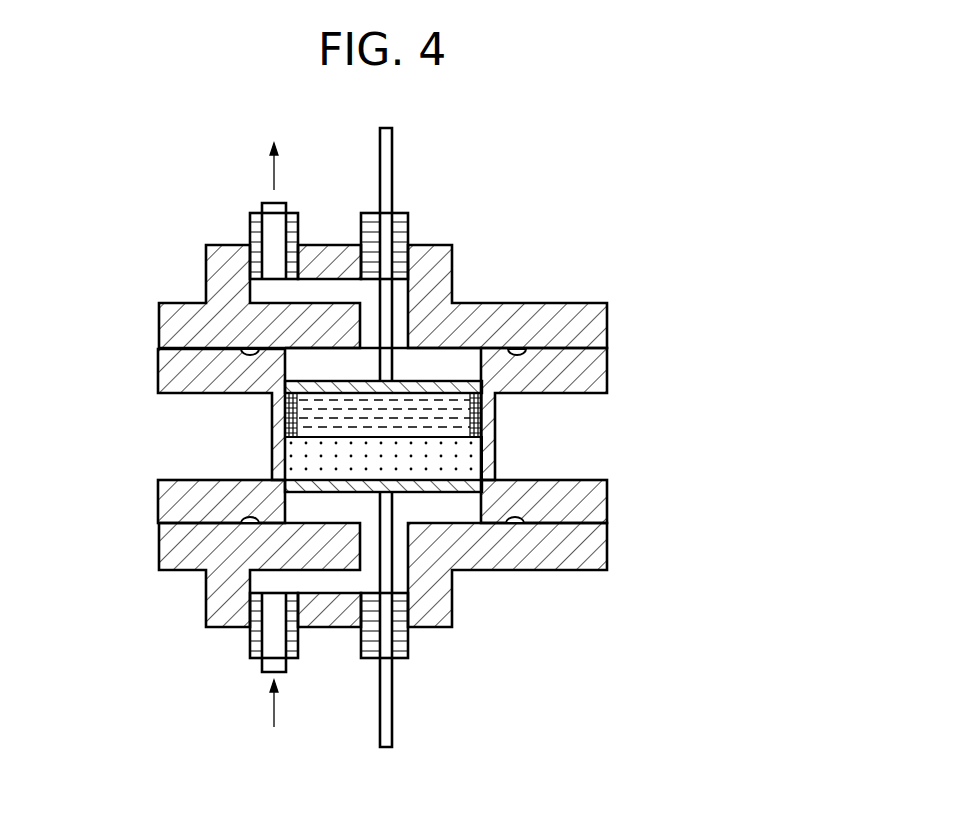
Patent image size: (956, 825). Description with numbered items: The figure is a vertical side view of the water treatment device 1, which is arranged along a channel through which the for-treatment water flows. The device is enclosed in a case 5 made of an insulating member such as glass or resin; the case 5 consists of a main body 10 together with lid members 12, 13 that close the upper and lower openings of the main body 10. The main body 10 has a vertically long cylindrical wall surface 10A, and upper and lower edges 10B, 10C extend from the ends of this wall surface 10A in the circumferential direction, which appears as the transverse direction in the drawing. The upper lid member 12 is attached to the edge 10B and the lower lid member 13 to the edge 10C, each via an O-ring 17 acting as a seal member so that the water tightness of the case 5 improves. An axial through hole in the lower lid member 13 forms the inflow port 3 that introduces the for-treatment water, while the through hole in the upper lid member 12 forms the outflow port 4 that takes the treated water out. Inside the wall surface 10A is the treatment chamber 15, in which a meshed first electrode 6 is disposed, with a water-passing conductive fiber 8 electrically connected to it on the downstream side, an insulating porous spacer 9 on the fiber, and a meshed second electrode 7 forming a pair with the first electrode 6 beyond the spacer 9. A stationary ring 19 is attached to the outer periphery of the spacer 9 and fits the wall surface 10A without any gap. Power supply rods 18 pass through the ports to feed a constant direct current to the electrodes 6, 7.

The water treatment device 1 is at (582, 203).
The inflow port 3 is at (258, 668).
The outflow port 4 is at (288, 208).
The case 5 is at (610, 302).
The first electrode 6 is at (450, 493).
The second electrode 7 is at (330, 380).
The conductive fiber 8 is at (288, 455).
The spacer 9 is at (497, 418).
The main body 10 is at (612, 508).
The wall surface 10A is at (497, 460).
The upper edge 10B is at (167, 372).
The lower edge 10C is at (158, 518).
The lid member 12 is at (600, 323).
The lid member 13 is at (593, 570).
The treatment chamber 15 is at (442, 360).
The O-ring 17 is at (250, 350).
The power supply rod 18 is at (392, 143).
The stationary ring 19 is at (287, 425).